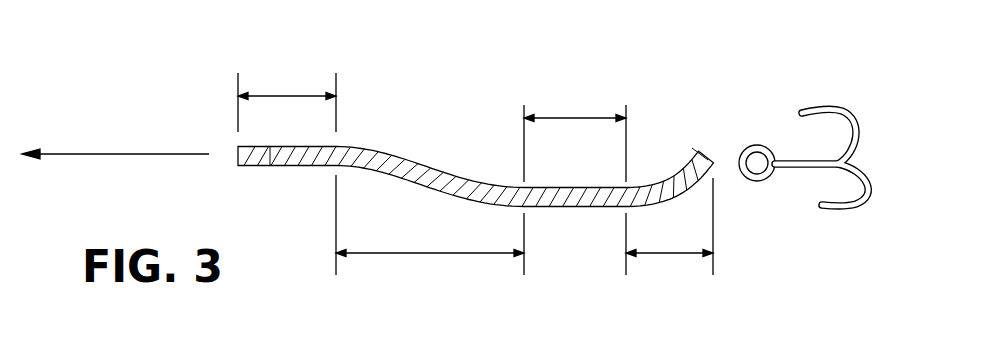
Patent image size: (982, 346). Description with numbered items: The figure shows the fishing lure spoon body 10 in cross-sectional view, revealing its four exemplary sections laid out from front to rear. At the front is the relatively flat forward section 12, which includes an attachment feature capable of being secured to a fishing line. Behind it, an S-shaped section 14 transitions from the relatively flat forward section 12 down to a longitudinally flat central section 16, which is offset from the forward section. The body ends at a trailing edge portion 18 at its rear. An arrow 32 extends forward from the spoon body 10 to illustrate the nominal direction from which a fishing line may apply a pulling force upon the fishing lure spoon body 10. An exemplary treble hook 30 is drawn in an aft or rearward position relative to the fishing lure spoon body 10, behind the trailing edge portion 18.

The fishing lure spoon body 10 is at (704, 63).
The relatively flat forward section 12 is at (287, 95).
The S-shaped section 14 is at (430, 254).
The longitudinally flat central section 16 is at (577, 117).
The trailing edge portion 18 is at (663, 254).
The treble hook 30 is at (830, 107).
The arrow 32 is at (127, 153).